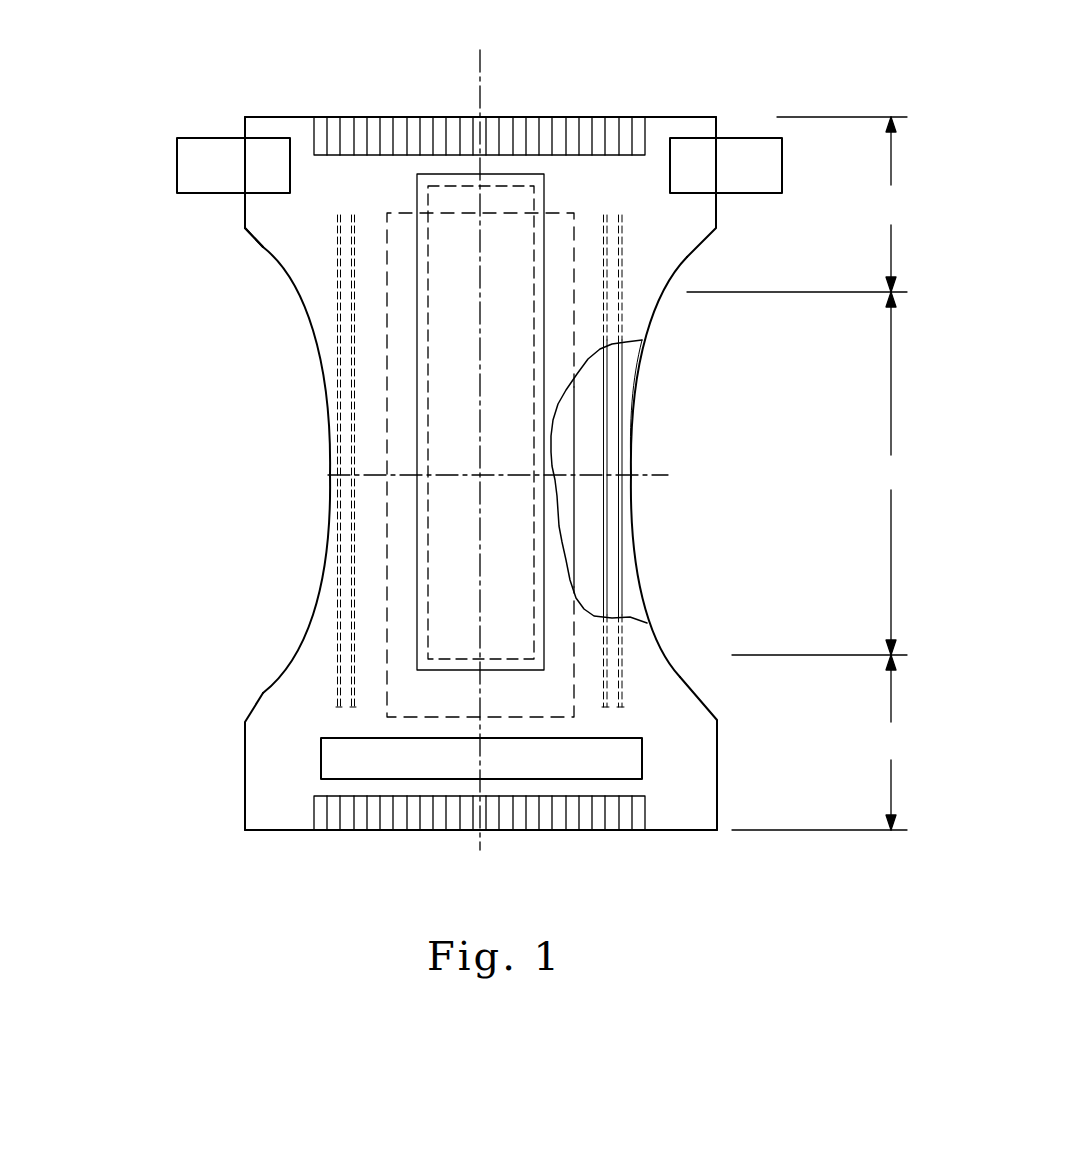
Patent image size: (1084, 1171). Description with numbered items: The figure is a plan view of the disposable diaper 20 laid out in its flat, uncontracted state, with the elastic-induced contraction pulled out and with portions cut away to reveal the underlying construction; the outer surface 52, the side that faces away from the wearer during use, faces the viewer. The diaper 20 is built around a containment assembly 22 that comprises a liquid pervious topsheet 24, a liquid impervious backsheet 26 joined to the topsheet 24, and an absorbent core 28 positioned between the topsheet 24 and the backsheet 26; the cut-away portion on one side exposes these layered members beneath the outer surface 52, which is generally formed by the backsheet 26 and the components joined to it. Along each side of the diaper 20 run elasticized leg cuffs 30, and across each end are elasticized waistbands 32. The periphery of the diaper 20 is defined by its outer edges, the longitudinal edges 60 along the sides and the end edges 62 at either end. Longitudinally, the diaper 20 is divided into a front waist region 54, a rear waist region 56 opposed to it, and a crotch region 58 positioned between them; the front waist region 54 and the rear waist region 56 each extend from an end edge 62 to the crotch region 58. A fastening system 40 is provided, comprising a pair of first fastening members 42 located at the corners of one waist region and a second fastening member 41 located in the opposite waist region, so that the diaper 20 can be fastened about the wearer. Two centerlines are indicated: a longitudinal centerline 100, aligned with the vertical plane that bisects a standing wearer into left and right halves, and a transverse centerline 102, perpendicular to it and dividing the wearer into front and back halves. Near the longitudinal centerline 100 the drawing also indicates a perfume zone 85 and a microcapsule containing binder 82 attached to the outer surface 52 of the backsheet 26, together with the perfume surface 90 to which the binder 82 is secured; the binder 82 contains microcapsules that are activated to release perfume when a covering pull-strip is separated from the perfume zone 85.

The diaper 20 is at (213, 90).
The containment assembly 22 is at (318, 348).
The liquid pervious topsheet 24 is at (630, 350).
The liquid impervious backsheet 26 is at (268, 212).
The absorbent core 28 is at (563, 430).
The elasticized leg cuffs 30 is at (607, 542).
The elasticized waistbands 32 is at (605, 127).
The fastening system 40 is at (168, 183).
The second fastening member 41 is at (616, 772).
The first fastening members 42 is at (203, 150).
The outer surface 52 is at (290, 242).
The front waist region 54 is at (819, 742).
The rear waist region 56 is at (797, 204).
The crotch region 58 is at (819, 473).
The longitudinal edges 60 is at (300, 303).
The end edges 62 is at (338, 117).
The microcapsule containing binder 82 is at (437, 185).
The perfume zone 85 is at (499, 165).
The perfume surface 90 is at (542, 197).
The longitudinal centerline 100 is at (480, 62).
The transverse centerline 102 is at (653, 473).